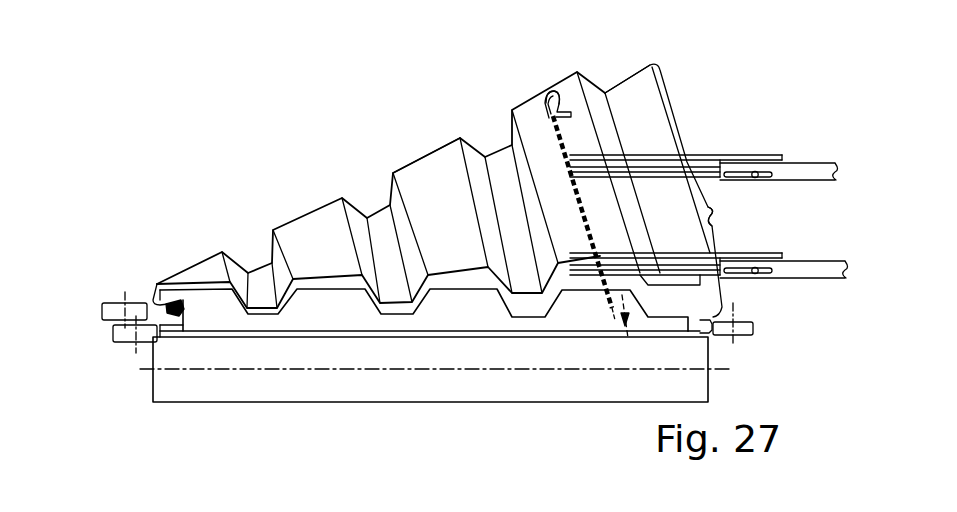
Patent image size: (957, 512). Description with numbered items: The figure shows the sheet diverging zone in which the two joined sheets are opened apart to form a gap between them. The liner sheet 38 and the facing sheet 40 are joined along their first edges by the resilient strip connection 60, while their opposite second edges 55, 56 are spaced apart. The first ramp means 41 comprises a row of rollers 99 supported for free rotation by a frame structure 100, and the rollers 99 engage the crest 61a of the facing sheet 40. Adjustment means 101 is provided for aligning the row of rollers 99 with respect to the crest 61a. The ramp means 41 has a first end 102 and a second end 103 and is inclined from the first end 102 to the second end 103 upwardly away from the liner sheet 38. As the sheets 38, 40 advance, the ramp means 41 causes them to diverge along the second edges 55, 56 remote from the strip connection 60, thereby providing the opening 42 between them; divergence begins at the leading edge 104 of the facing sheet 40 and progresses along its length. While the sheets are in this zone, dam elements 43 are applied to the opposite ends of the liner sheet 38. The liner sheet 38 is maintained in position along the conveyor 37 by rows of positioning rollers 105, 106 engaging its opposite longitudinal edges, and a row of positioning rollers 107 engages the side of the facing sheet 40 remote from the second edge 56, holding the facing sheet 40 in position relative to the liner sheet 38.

The conveyor 37 is at (512, 398).
The liner sheet 38 is at (336, 334).
The facing sheet 40 is at (430, 144).
The first ramp means 41 is at (570, 204).
The opening 42 is at (728, 211).
The dam element 43 is at (450, 318).
The second edge of the liner sheet 55 is at (707, 320).
The second edge of the facing sheet 56 is at (653, 67).
The resilient strip connection 60 is at (178, 296).
The crest of the facing sheet 61a is at (553, 90).
The rollers 99 is at (553, 130).
The frame structure 100 is at (593, 237).
The adjustment means 101 is at (752, 171).
The first end of the ramp means 102 is at (628, 338).
The second end of the ramp means 103 is at (546, 103).
The leading edge of the facing sheet 104 is at (624, 88).
The positioning rollers 105 is at (753, 331).
The positioning rollers 106 is at (113, 334).
The positioning rollers 107 is at (108, 307).